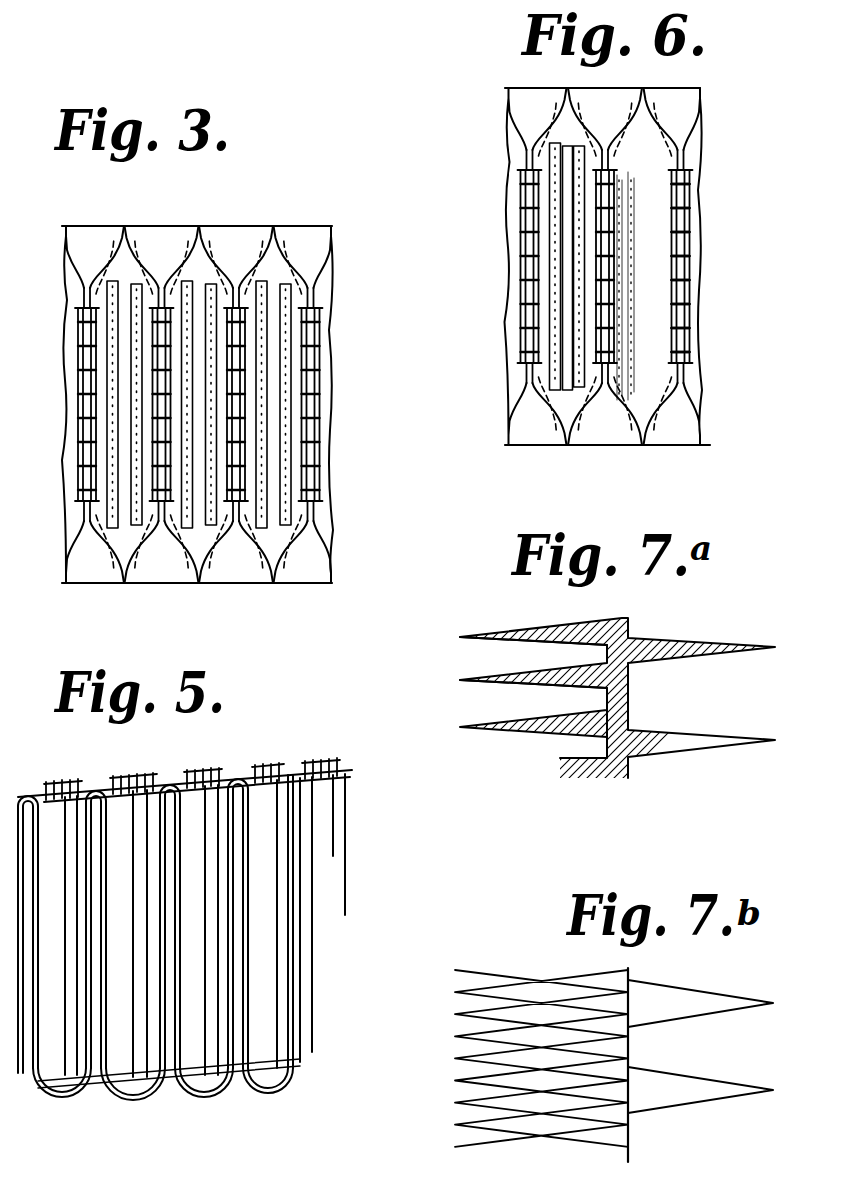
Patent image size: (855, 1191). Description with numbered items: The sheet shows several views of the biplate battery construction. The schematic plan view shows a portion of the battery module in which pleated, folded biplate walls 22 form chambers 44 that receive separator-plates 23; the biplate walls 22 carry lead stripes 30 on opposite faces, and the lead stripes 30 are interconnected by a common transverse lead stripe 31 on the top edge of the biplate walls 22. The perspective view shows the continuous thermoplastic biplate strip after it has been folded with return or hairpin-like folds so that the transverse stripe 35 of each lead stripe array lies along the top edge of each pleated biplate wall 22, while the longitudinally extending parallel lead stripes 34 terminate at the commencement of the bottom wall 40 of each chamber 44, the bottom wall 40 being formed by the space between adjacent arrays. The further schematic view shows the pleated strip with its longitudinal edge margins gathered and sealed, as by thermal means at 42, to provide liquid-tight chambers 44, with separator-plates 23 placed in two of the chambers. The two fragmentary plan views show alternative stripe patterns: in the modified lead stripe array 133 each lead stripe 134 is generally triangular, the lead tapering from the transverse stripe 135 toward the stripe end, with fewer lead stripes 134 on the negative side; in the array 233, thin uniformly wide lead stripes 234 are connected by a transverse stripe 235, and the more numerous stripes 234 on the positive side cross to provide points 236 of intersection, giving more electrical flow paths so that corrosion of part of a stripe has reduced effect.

In FIG. 3, the pleated biplate wall 22 is at (315, 360).
In FIG. 6, the pleated biplate wall 22 is at (688, 211).
In FIG. 3, the separator-plate 23 is at (268, 275).
In FIG. 6, the separator-plate 23 is at (570, 410).
In FIG. 3, the lead stripe 30 is at (324, 455).
In FIG. 3, the common transverse lead stripe 31 is at (78, 330).
In FIG. 6, the lead stripe 34 is at (690, 302).
In FIG. 5, the lead stripe 34 is at (300, 841).
In FIG. 6, the transverse stripe 35 is at (528, 192).
In FIG. 5, the transverse stripe 35 is at (85, 780).
In FIG. 3, the bottom wall 40 is at (295, 541).
In FIG. 5, the bottom wall 40 is at (190, 1080).
In FIG. 3, the thermal seal 42 is at (200, 226).
In FIG. 6, the thermal seal 42 is at (646, 100).
In FIG. 3, the chamber 44 is at (301, 300).
In FIG. 6, the chamber 44 is at (545, 345).
In FIG. 7a, the modified lead stripe array 133 is at (638, 616).
In FIG. 7a, the lead stripe 134 is at (498, 643).
In FIG. 7a, the transverse stripe 135 is at (622, 708).
In FIG. 7b, the lead stripe array 233 is at (630, 975).
In FIG. 7b, the lead stripe 234 is at (478, 970).
In FIG. 7b, the transverse stripe 235 is at (640, 1050).
In FIG. 7b, the point of intersection 236 is at (543, 980).